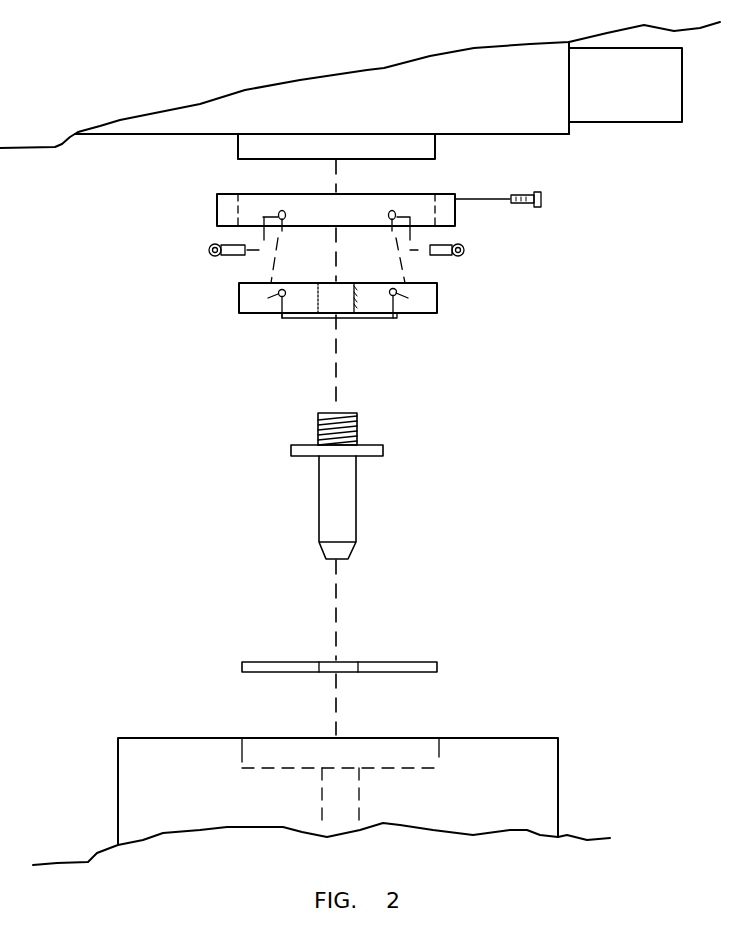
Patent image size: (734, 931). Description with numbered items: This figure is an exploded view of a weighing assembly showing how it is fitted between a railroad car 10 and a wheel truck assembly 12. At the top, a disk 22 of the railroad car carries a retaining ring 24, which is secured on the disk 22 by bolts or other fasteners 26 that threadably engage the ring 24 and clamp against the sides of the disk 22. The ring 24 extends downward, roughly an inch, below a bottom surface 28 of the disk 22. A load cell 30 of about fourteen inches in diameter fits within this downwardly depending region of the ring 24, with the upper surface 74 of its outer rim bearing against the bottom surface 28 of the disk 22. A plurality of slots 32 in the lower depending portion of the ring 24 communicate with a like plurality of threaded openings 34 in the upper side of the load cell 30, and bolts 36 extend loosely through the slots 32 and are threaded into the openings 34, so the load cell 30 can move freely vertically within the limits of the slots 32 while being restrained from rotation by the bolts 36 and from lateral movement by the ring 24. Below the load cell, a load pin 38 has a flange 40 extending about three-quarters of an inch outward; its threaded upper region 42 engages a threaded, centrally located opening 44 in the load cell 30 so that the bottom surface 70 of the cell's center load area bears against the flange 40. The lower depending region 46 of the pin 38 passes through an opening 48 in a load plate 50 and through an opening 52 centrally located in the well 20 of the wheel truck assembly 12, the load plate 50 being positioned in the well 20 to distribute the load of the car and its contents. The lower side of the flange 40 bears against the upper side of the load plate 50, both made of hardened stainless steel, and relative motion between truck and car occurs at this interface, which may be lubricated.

The machine body 10 is at (511, 97).
The wheel truck assembly 12 is at (100, 738).
The well 20 is at (443, 747).
The disk 22 is at (417, 143).
The retaining ring 24 is at (217, 210).
The fasteners 26 is at (435, 152).
The bottom surface 28 is at (243, 162).
The load cell 30 is at (437, 298).
The slots 32 is at (282, 211).
The threaded openings 34 is at (283, 320).
The bolts 36 is at (208, 253).
The load pin 38 is at (343, 486).
The flange 40 is at (383, 450).
The threaded upper region 42 is at (318, 430).
The threaded central opening 44 is at (355, 312).
The lower depending region 46 is at (319, 508).
The opening 48 is at (360, 660).
The load plate 50 is at (438, 662).
The opening 52 is at (363, 808).
The bottom surface 70 is at (322, 320).
The upper surface 74 is at (245, 283).